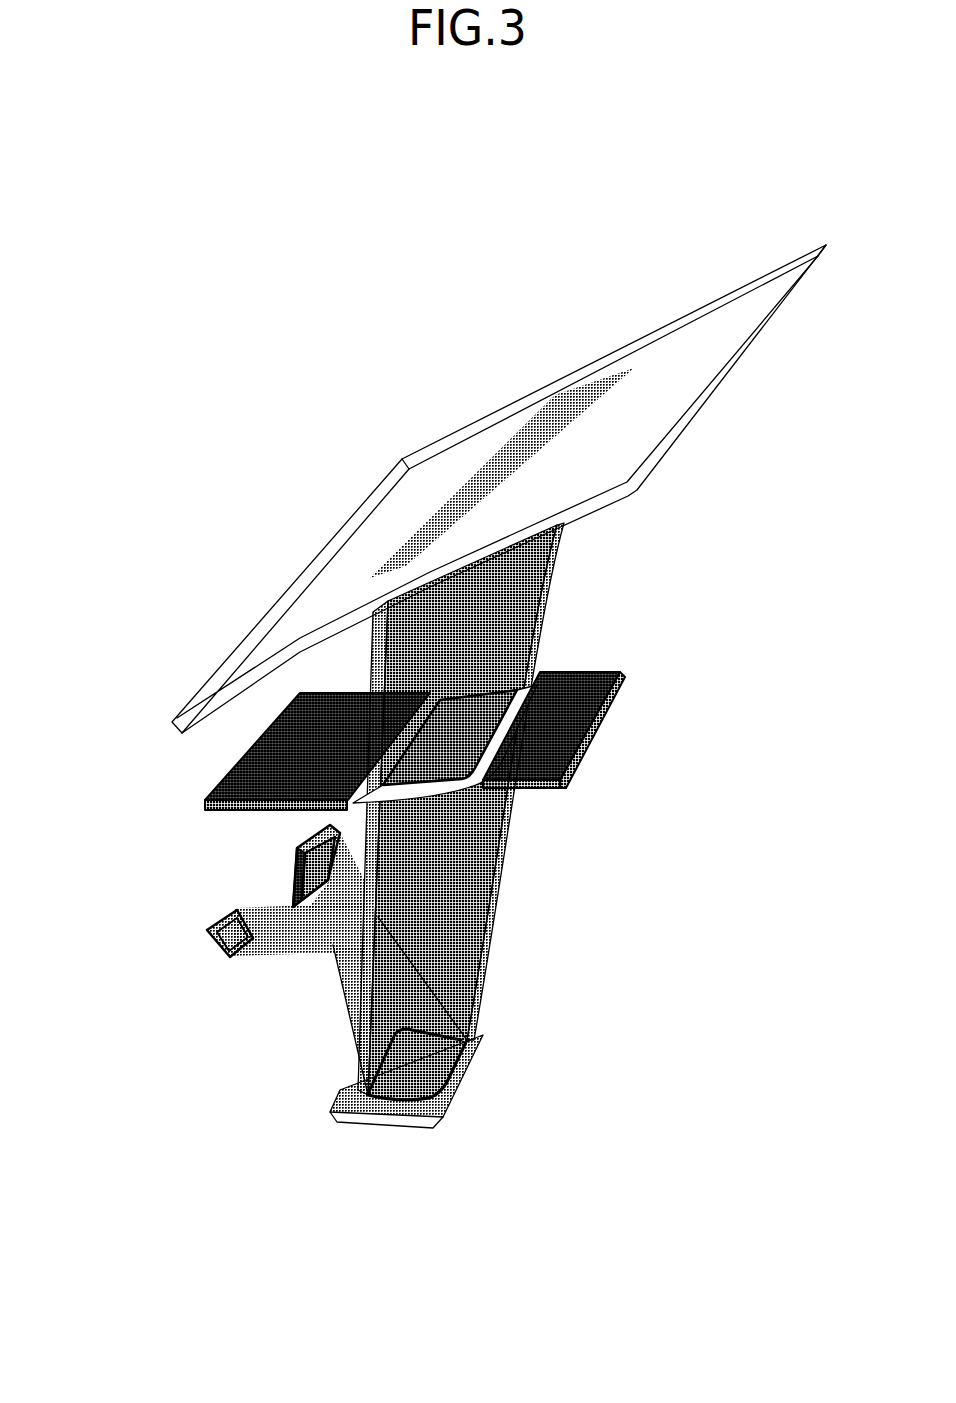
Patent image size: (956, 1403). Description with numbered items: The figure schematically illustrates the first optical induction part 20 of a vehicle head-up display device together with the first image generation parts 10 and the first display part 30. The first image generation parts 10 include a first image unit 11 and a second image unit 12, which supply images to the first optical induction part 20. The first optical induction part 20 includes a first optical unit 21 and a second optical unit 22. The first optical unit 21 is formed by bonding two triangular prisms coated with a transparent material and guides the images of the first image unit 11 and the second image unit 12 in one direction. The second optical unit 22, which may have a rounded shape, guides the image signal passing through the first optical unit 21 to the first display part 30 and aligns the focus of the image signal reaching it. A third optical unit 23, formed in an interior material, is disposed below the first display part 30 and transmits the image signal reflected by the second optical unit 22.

The first image generation part 10 is at (205, 960).
The first image unit 11 is at (181, 948).
The second image unit 12 is at (297, 860).
The first optical induction part 20 is at (402, 912).
The first optical unit 21 is at (334, 942).
The second optical unit 22 is at (357, 1117).
The third optical unit 23 is at (462, 795).
The first display part 30 is at (522, 442).